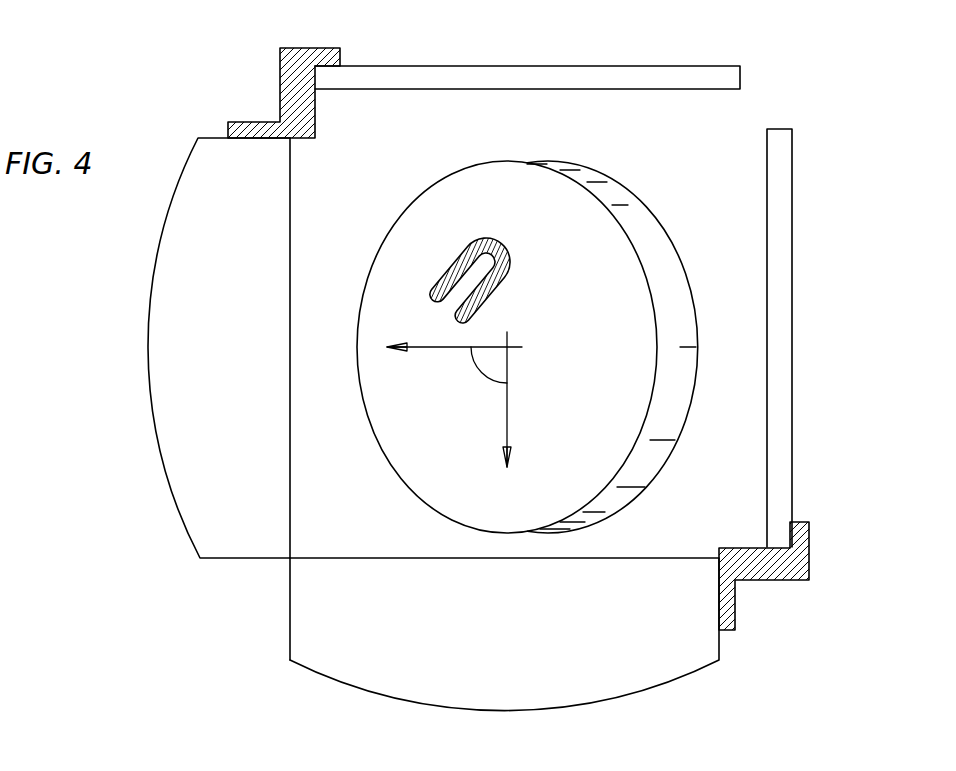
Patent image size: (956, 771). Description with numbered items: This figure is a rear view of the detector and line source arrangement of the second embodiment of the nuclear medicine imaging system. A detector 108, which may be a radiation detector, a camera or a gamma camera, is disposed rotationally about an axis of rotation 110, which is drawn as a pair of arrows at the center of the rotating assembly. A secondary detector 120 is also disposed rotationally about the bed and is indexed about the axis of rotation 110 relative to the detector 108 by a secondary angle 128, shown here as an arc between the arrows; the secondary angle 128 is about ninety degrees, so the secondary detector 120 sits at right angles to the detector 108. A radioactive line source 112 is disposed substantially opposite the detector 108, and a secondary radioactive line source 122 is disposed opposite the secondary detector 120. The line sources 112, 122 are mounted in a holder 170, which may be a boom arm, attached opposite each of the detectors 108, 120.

The detector 108 is at (244, 499).
The secondary detector 120 is at (619, 659).
The secondary radioactive line source 122 is at (645, 66).
The radioactive line source 112 is at (793, 208).
The holder 170 is at (257, 87).
The axis of rotation 110 is at (510, 345).
The secondary angle 128 is at (475, 366).